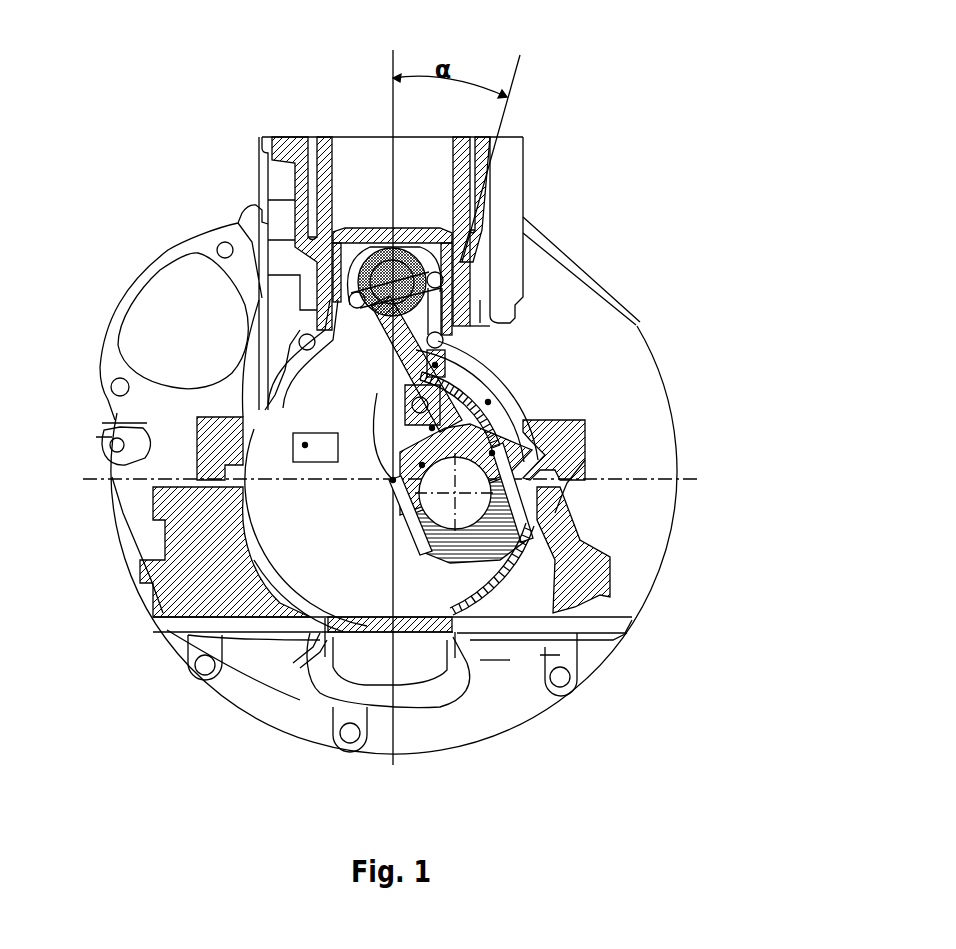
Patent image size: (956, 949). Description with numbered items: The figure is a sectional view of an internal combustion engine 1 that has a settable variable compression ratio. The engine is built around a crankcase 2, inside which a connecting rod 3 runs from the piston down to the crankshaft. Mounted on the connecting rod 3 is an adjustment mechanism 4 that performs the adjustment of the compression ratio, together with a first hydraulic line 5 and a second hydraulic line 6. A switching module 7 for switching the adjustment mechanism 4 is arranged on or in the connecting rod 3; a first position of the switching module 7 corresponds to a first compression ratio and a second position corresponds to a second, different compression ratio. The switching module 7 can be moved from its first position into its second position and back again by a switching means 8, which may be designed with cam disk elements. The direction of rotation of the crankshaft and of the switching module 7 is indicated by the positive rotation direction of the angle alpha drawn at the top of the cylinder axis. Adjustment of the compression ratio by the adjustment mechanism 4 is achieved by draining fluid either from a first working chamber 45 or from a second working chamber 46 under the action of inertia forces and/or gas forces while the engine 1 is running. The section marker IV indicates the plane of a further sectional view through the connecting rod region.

The internal combustion engine 1 is at (553, 65).
The crankcase 2 is at (505, 170).
The connecting rod 3 is at (393, 480).
The adjustment mechanism 4 is at (405, 383).
The first hydraulic line 5 is at (432, 428).
The second hydraulic line 6 is at (422, 465).
The switching module 7 is at (492, 453).
The switching means 8 is at (305, 445).
The first working chamber 45 is at (488, 402).
The second working chamber 46 is at (435, 365).
The section IV is at (470, 402).